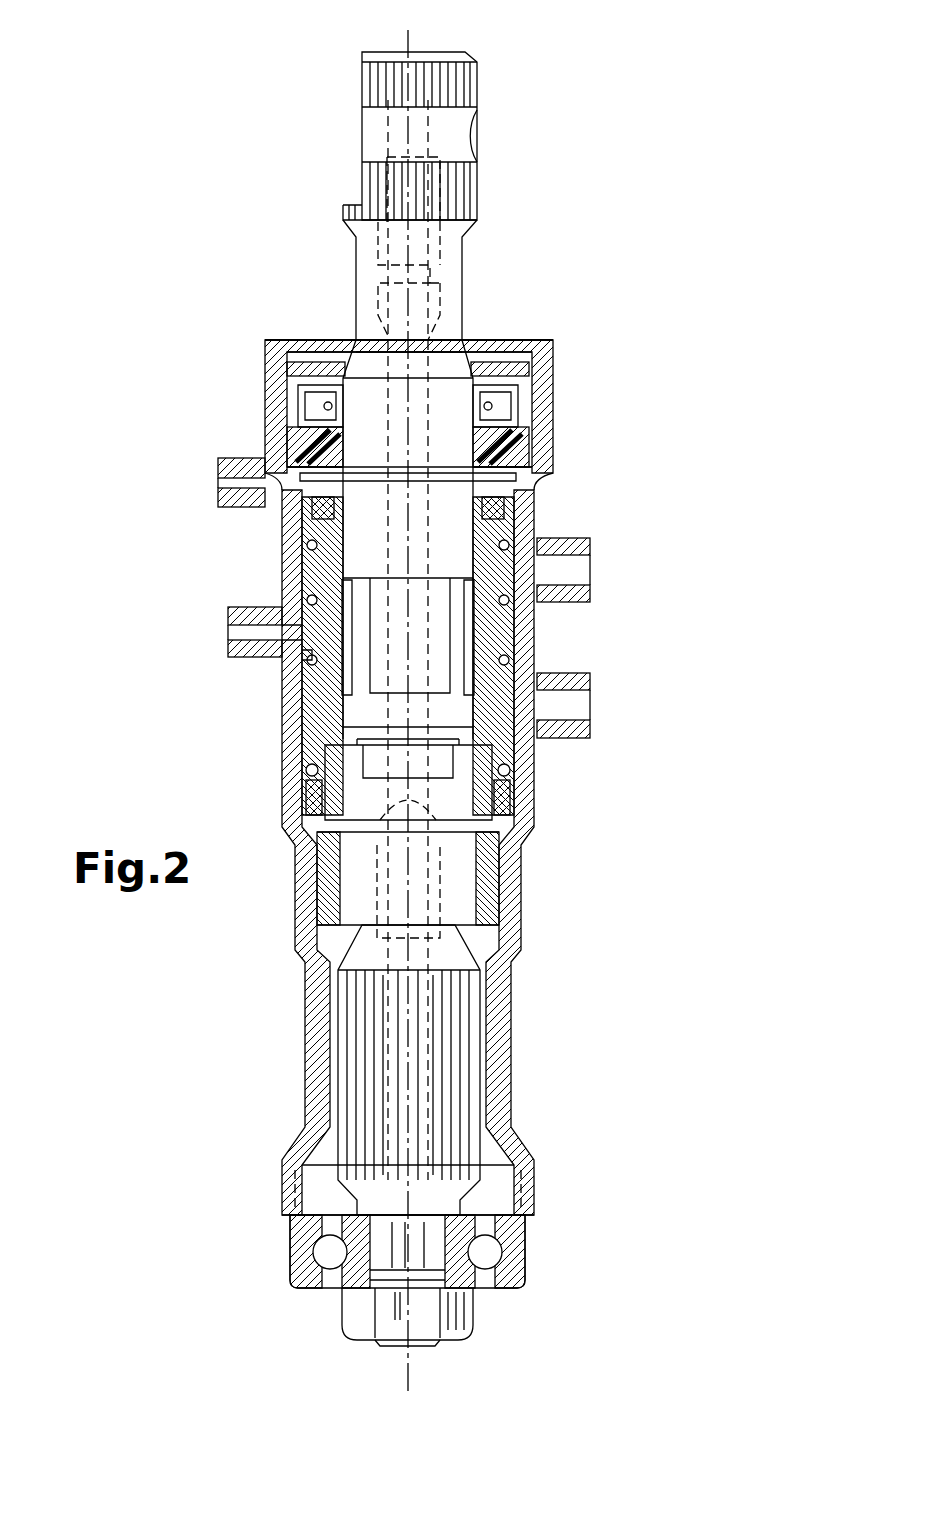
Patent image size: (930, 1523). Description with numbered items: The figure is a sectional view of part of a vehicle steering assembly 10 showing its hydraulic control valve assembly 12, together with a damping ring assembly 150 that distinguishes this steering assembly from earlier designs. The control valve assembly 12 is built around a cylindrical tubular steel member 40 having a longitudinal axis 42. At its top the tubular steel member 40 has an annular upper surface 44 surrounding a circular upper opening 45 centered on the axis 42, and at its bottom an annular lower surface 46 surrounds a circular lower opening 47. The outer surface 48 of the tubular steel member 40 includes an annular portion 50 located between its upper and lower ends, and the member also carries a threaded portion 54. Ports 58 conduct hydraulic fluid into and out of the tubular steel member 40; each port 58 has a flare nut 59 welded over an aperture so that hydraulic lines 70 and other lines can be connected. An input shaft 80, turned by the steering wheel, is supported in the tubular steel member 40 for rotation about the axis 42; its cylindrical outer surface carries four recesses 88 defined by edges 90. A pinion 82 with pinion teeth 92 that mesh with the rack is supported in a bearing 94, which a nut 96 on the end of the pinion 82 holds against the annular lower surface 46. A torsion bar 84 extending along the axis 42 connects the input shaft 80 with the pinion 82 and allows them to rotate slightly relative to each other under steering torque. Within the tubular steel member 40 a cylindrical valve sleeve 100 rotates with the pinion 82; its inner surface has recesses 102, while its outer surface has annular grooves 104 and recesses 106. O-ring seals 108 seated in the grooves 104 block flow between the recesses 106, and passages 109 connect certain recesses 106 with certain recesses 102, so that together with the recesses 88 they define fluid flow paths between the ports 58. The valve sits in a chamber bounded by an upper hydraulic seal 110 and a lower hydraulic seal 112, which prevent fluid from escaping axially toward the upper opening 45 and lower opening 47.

The steering assembly 10 is at (207, 278).
The control valve assembly 12 is at (262, 402).
The tubular steel member 40 is at (545, 412).
The longitudinal axis 42 is at (405, 42).
The annular upper surface 44 is at (536, 342).
The circular upper opening 45 is at (496, 330).
The annular lower surface 46 is at (528, 1217).
The circular lower opening 47 is at (316, 1212).
The outer surface 48 is at (523, 898).
The annular portion 50 is at (537, 833).
The threaded portion 54 is at (530, 1201).
The port 58 is at (214, 437).
The flare nut 59 is at (268, 485).
The hydraulic line 70 is at (297, 580).
The input shaft 80 is at (380, 133).
The pinion 82 is at (352, 1040).
The torsion bar 84 is at (378, 258).
The recess 88 is at (387, 602).
The edge 90 is at (432, 602).
The pinion teeth 92 is at (383, 1075).
The bearing 94 is at (517, 1272).
The nut 96 is at (457, 1310).
The valve sleeve 100 is at (325, 712).
The recess 102 is at (282, 620).
The annular groove 104 is at (282, 510).
The recess 106 is at (302, 560).
The O-ring seal 108 is at (292, 530).
The passage 109 is at (282, 645).
The upper hydraulic seal 110 is at (300, 448).
The lower hydraulic seal 112 is at (308, 805).
The damping ring assembly 150 is at (555, 475).